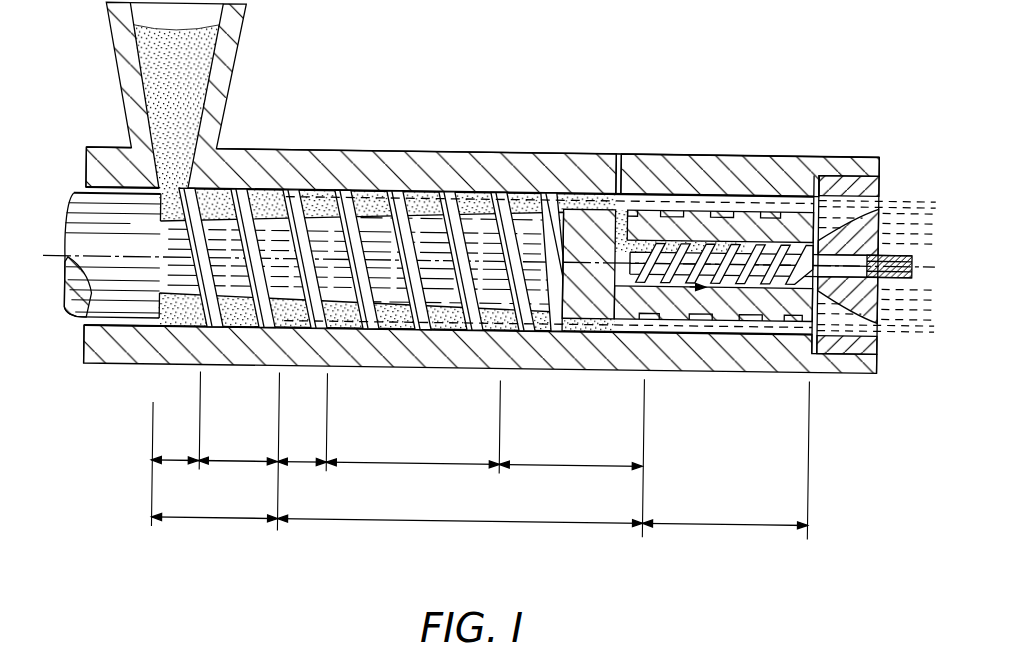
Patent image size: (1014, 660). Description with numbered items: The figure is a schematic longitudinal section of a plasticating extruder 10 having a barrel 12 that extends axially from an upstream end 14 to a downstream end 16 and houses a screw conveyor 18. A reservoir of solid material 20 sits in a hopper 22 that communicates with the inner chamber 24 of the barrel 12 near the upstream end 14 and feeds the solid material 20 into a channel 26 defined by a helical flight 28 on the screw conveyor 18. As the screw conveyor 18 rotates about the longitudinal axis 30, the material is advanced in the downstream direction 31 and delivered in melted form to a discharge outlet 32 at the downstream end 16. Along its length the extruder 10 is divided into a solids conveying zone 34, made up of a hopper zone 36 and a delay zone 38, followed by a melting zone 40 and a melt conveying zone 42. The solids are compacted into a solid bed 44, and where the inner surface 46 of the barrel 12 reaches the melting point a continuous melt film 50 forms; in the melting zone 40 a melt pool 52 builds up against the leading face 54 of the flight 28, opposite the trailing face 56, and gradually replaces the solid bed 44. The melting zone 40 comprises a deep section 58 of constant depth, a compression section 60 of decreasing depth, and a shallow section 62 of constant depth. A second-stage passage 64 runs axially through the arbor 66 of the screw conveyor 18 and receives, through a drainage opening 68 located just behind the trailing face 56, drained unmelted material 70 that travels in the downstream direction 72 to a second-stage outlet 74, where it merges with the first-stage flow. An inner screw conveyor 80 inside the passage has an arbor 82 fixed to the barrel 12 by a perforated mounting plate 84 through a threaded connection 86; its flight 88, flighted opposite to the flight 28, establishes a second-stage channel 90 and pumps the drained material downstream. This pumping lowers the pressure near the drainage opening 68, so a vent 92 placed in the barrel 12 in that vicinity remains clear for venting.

The plasticating extruder 10 is at (485, 145).
The barrel 12 is at (555, 144).
The upstream end 14 is at (83, 347).
The downstream end 16 is at (873, 355).
The screw conveyor 18 is at (797, 208).
The solid material 20 is at (185, 75).
The hopper 22 is at (228, 88).
The inner chamber 24 is at (195, 306).
The channel 26 is at (213, 201).
The helical flight 28 is at (265, 201).
The longitudinal axis 30 is at (55, 238).
The downstream direction 31 is at (393, 129).
The discharge outlet 32 is at (882, 194).
The solids conveying zone 34 is at (236, 520).
The hopper zone 36 is at (176, 466).
The delay zone 38 is at (234, 464).
The melting zone 40 is at (376, 520).
The melt conveying zone 42 is at (737, 520).
The solid bed 44 is at (258, 183).
The inner surface 46 is at (240, 305).
The melt film 50 is at (360, 186).
The melt pool 52 is at (350, 300).
The leading face 54 is at (333, 314).
The trailing face 56 is at (382, 225).
The deep section 58 is at (300, 464).
The compression section 60 is at (430, 463).
The shallow section 62 is at (584, 462).
The second-stage passage 64 is at (745, 246).
The arbor 66 is at (708, 195).
The drainage opening 68 is at (622, 220).
The drained unmelted material 70 is at (648, 229).
The downstream direction 72 is at (690, 284).
The second-stage outlet 74 is at (822, 237).
The inner screw conveyor 80 is at (767, 294).
The arbor 82 is at (812, 290).
The perforated mounting plate 84 is at (875, 341).
The threaded connection 86 is at (888, 272).
The flight 88 is at (743, 282).
The second-stage channel 90 is at (720, 276).
The vent 92 is at (622, 222).